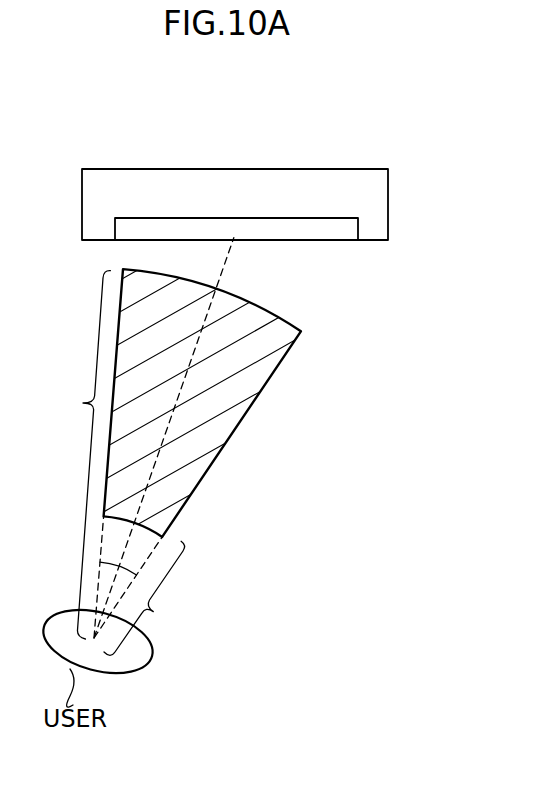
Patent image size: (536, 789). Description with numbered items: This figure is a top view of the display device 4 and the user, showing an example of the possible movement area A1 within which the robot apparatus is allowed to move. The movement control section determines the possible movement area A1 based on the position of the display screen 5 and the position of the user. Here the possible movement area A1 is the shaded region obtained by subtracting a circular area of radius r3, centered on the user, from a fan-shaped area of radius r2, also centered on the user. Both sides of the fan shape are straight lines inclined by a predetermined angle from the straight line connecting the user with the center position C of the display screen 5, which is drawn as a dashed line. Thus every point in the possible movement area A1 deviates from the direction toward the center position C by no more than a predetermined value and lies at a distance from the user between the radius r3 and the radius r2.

The display device 4 is at (388, 198).
The display screen 5 is at (317, 218).
The center position of the display screen C is at (243, 248).
The possible movement area A1 is at (212, 463).
The radius of the fan-shaped area r2 is at (78, 455).
The radius of the circular area r3 is at (152, 598).